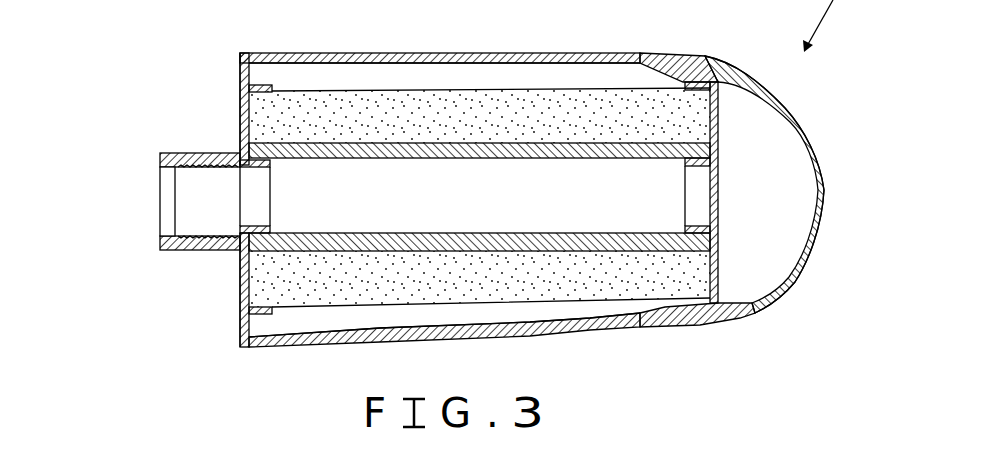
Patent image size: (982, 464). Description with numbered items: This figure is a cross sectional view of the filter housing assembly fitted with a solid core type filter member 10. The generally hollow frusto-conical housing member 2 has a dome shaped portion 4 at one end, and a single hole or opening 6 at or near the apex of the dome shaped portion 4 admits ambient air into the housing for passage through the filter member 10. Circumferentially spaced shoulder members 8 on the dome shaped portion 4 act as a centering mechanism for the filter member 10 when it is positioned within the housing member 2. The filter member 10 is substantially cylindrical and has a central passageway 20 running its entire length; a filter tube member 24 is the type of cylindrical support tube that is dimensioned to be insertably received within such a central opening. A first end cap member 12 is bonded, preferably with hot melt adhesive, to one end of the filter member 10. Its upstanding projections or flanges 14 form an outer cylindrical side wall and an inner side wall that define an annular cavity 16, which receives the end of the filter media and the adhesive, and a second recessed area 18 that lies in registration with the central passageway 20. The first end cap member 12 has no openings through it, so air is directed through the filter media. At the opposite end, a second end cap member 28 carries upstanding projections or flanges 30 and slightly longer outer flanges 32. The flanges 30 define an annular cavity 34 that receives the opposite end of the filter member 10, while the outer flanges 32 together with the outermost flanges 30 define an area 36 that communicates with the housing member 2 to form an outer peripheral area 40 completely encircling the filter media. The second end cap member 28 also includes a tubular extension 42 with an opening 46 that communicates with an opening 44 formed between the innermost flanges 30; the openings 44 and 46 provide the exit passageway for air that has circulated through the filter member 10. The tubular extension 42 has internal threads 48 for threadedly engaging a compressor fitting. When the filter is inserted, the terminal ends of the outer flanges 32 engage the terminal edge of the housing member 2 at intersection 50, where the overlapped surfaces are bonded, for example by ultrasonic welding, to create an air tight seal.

The housing member 2 is at (459, 49).
The dome shaped portion 4 is at (817, 137).
The hole or opening 6 is at (826, 191).
The shoulder members 8 is at (688, 57).
The filter member 10 is at (600, 283).
The first end cap member 12 is at (724, 123).
The upstanding projections or flanges 14 is at (708, 96).
The annular cavity 16 is at (398, 118).
The second cavity or recessed area 18 is at (718, 191).
The central passageway 20 is at (563, 198).
The filter tube member 24 is at (466, 162).
The second end cap member 28 is at (240, 320).
The upstanding projections or flanges 30 is at (247, 97).
The outer flanges 32 is at (290, 53).
The annular cavity or recessed area 34 is at (243, 128).
The area 36 is at (270, 77).
The outer peripheral area 40 is at (500, 82).
The tubular extension 42 is at (172, 247).
The opening 44 is at (267, 210).
The opening 46 is at (217, 210).
The internal threads 48 is at (172, 196).
The intersection 50 is at (312, 53).